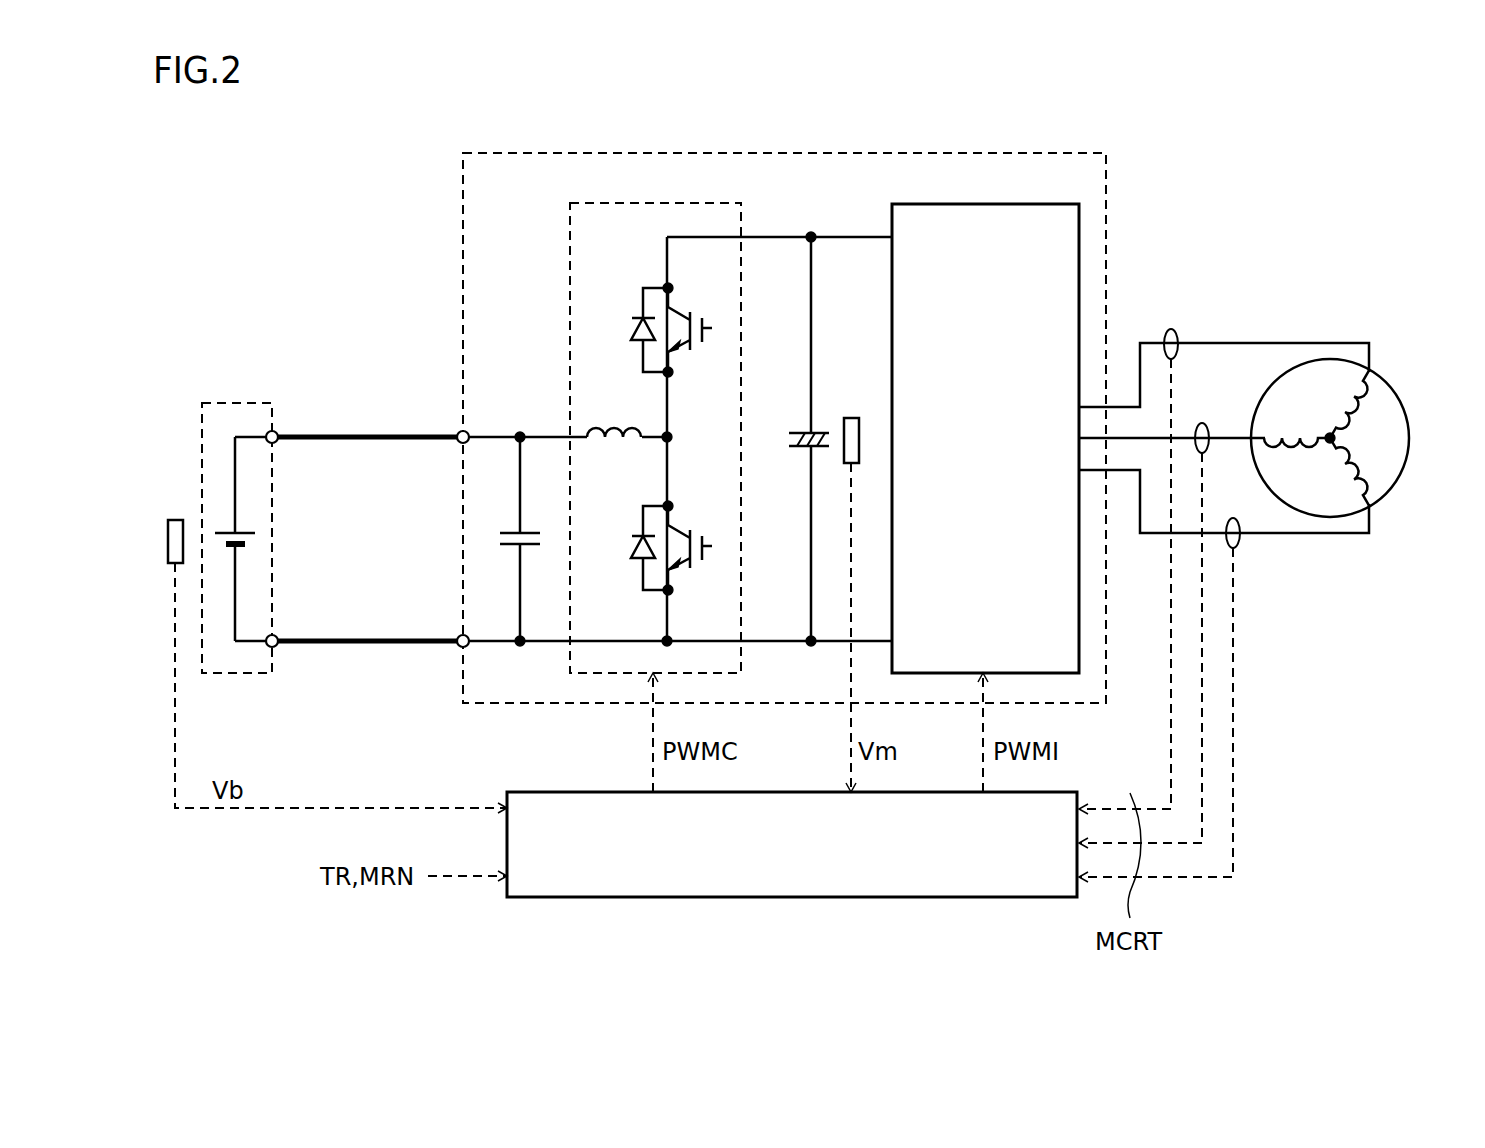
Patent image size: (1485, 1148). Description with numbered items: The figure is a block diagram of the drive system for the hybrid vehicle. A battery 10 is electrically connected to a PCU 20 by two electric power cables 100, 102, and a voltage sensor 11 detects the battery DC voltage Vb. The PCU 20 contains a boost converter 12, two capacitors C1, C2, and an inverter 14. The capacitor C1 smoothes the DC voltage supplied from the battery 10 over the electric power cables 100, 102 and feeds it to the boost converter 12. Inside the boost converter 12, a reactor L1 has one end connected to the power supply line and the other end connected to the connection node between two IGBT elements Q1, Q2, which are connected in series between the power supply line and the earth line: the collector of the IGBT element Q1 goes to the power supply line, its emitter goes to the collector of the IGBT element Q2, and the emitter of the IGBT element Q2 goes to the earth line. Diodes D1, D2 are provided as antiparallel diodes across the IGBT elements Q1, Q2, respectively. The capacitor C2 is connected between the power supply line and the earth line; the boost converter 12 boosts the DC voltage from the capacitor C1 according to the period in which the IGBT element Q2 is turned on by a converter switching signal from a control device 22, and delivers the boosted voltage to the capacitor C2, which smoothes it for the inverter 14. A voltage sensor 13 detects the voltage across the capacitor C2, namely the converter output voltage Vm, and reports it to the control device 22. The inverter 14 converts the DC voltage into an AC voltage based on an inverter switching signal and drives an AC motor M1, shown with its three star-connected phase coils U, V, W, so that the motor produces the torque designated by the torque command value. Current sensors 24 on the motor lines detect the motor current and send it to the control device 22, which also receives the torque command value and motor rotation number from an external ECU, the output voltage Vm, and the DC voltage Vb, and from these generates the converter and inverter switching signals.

The battery 10 is at (233, 673).
The voltage sensor 11 is at (176, 520).
The boost converter 12 is at (655, 203).
The voltage sensor 13 is at (851, 418).
The inverter 14 is at (982, 204).
The PCU 20 is at (792, 153).
The control device 22 is at (1015, 898).
The current sensor 24 is at (1171, 329).
The electric power cable 100 is at (367, 433).
The electric power cable 102 is at (363, 647).
The capacitor C1 is at (515, 530).
The capacitor C2 is at (799, 431).
The reactor L1 is at (614, 417).
The IGBT element Q1 is at (694, 330).
The IGBT element Q2 is at (694, 548).
The diode D1 is at (636, 330).
The diode D2 is at (636, 548).
The AC motor M1 is at (1351, 438).
The U-phase coil U is at (1355, 406).
The V-phase coil V is at (1297, 425).
The W-phase coil W is at (1346, 469).